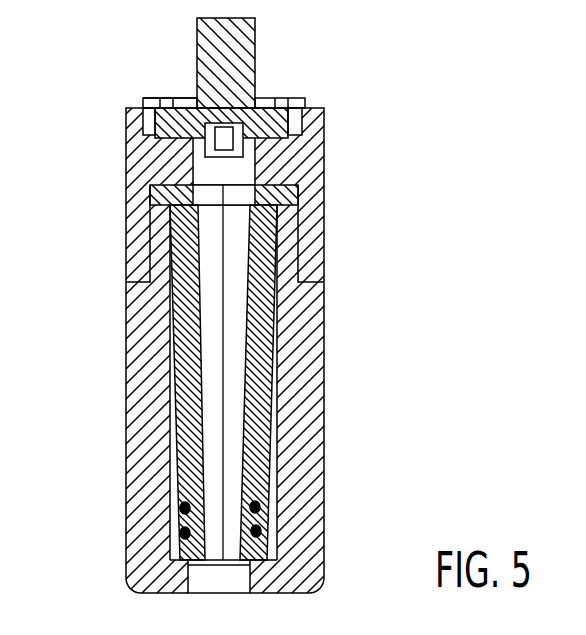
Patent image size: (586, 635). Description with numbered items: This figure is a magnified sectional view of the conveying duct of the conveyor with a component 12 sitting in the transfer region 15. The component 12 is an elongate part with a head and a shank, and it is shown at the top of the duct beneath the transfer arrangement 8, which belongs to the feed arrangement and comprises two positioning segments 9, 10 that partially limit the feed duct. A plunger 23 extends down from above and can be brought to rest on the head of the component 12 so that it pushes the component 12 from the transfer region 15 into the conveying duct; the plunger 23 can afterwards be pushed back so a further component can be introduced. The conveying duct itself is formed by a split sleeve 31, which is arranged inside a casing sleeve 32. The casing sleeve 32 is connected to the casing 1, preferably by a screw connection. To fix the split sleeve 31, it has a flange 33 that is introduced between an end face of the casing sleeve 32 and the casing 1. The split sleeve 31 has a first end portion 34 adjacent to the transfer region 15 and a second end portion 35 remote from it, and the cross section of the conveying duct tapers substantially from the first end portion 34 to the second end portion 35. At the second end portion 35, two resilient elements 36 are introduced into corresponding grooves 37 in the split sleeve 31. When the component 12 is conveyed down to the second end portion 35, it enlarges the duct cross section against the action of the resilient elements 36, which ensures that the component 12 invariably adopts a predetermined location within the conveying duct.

The casing 1 is at (126, 178).
The transfer arrangement 8 is at (287, 80).
The positioning segment 9 is at (143, 97).
The positioning segment 10 is at (297, 97).
The component 12 is at (243, 150).
The transfer region 15 is at (162, 66).
The plunger 23 is at (255, 42).
The split sleeve 31 is at (253, 382).
The casing sleeve 32 is at (136, 433).
The flange 33 is at (300, 196).
The first end portion 34 is at (112, 225).
The second end portion 35 is at (327, 467).
The resilient element 36 is at (260, 530).
The groove 37 is at (183, 537).